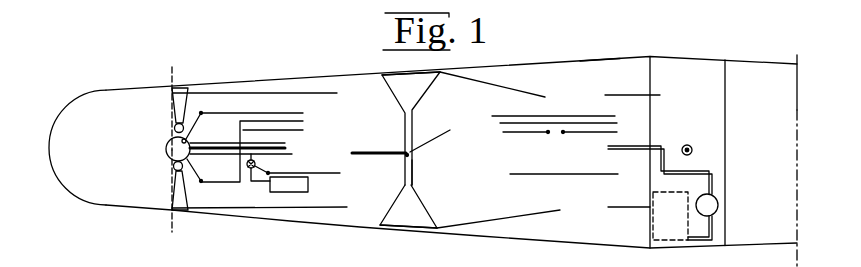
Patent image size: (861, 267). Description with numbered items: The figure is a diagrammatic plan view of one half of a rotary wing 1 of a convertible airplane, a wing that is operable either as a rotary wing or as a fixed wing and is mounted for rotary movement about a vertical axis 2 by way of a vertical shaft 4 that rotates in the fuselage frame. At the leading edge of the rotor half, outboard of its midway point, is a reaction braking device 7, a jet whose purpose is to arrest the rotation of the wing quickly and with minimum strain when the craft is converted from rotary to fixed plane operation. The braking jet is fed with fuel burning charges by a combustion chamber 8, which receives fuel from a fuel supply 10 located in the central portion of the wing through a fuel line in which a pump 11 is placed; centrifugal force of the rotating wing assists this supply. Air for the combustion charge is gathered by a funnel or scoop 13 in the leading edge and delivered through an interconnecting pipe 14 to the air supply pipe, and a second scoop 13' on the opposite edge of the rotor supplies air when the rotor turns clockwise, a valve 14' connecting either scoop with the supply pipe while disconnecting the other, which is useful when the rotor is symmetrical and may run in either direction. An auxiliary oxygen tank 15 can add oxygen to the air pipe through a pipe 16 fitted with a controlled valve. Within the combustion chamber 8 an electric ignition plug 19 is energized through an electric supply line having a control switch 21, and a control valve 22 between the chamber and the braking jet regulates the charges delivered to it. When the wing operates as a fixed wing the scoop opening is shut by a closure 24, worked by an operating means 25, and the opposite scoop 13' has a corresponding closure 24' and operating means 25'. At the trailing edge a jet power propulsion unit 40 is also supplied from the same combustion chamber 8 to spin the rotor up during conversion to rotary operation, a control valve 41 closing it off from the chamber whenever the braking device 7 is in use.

The wing 1 is at (357, 225).
The axis 2 is at (687, 146).
The vertical shaft 4 is at (693, 150).
The braking device 7 is at (180, 212).
The combustion chamber 8 is at (166, 148).
The fuel supply 10 is at (657, 222).
The pump 11 is at (719, 205).
The funnel or scoop 13 is at (410, 219).
The scoop 13' is at (421, 128).
The interconnecting pipe 14 is at (422, 170).
The valve 14' is at (441, 135).
The auxiliary oxygen tank 15 is at (308, 185).
The pipe 16 is at (264, 182).
The electric ignition plug 19 is at (186, 140).
The control switch 21 is at (563, 133).
The control valve 22 is at (174, 166).
The closure 24 is at (408, 244).
The closure 24' is at (400, 60).
The operating means 25 is at (498, 215).
The operating means 25' is at (495, 82).
The jet power propulsion unit 40 is at (184, 88).
The control valve 41 is at (175, 127).